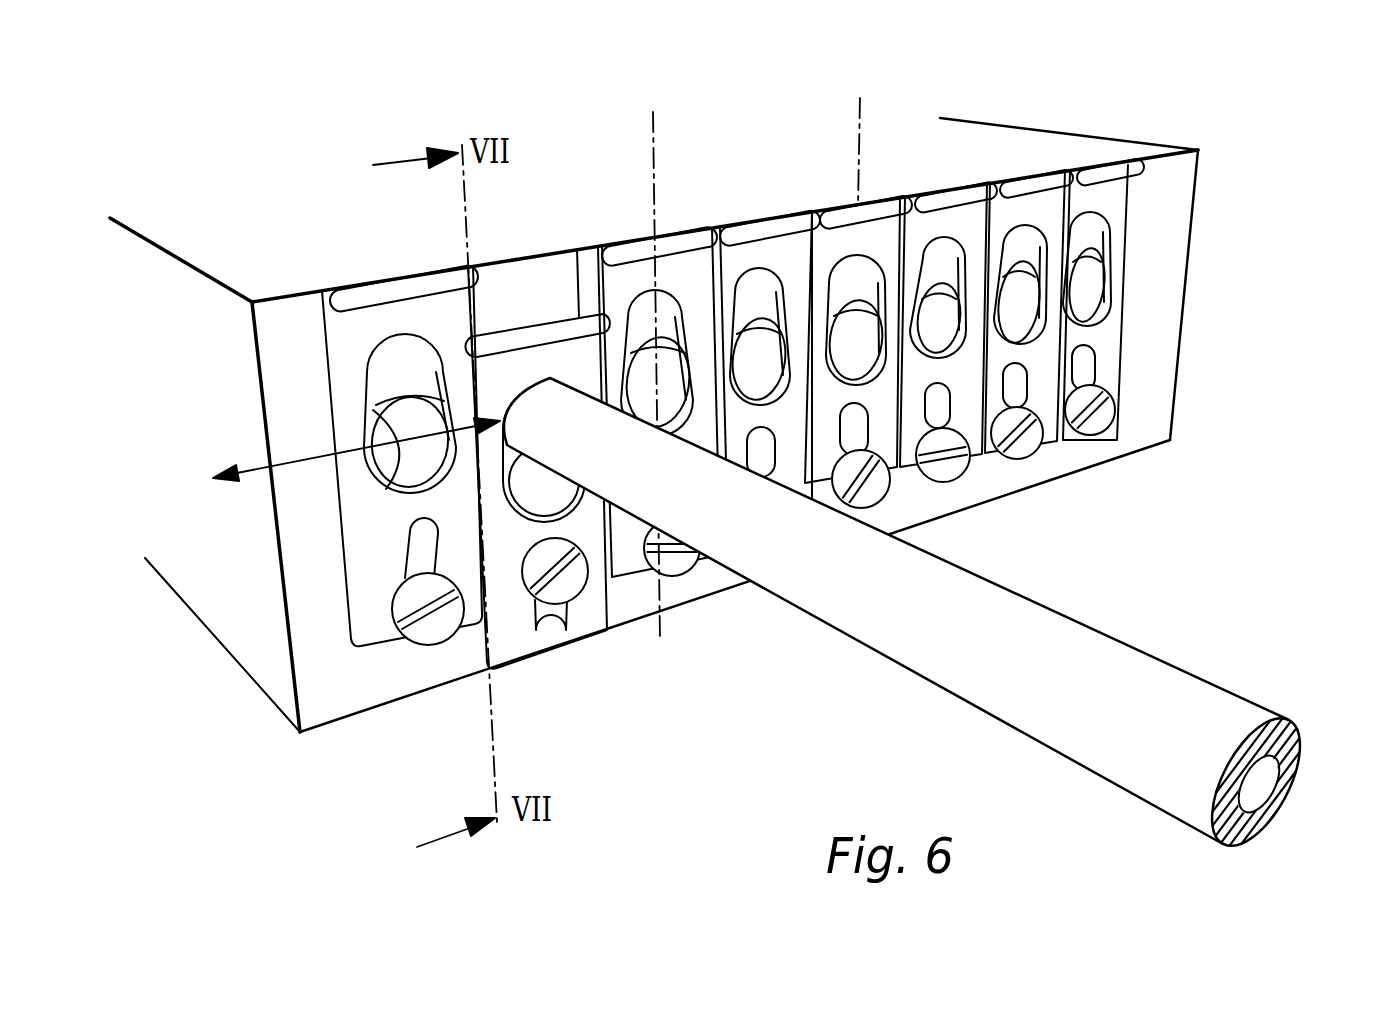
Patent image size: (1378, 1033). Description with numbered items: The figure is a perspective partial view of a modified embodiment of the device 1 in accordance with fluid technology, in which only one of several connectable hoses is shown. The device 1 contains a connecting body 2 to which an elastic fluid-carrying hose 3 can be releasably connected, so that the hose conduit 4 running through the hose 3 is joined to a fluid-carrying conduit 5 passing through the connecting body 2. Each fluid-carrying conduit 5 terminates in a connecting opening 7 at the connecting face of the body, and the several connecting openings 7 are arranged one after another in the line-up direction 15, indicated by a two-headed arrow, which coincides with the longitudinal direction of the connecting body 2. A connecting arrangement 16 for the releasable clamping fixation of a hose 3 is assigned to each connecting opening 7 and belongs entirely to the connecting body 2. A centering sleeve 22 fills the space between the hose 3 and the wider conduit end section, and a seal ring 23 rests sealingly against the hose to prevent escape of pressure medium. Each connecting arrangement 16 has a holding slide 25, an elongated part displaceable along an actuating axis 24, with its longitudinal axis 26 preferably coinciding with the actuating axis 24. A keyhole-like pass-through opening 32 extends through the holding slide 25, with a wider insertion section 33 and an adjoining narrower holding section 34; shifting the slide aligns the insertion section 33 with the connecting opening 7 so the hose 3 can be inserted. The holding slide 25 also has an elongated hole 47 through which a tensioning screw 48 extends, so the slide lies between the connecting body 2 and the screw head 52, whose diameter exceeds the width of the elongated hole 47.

The device 1 is at (1240, 145).
The connecting body 2 is at (232, 617).
The fluid-carrying hose 3 is at (1137, 672).
The hose conduit 4 is at (1259, 784).
The fluid-carrying conduit 5 is at (1026, 302).
The connecting opening 7 is at (858, 293).
The line-up direction 15 is at (310, 462).
The connecting arrangement 16 is at (581, 641).
The centering sleeve 22 is at (419, 393).
The seal ring 23 is at (390, 457).
The actuating axis 24 is at (654, 132).
The holding slide 25 is at (575, 360).
The longitudinal axis 26 is at (862, 117).
The pass-through opening 32 is at (378, 367).
The insertion section 33 is at (518, 522).
The holding section 34 is at (528, 383).
The elongated hole 47 is at (410, 560).
The tensioning screw 48 is at (580, 596).
The screw head 52 is at (527, 587).